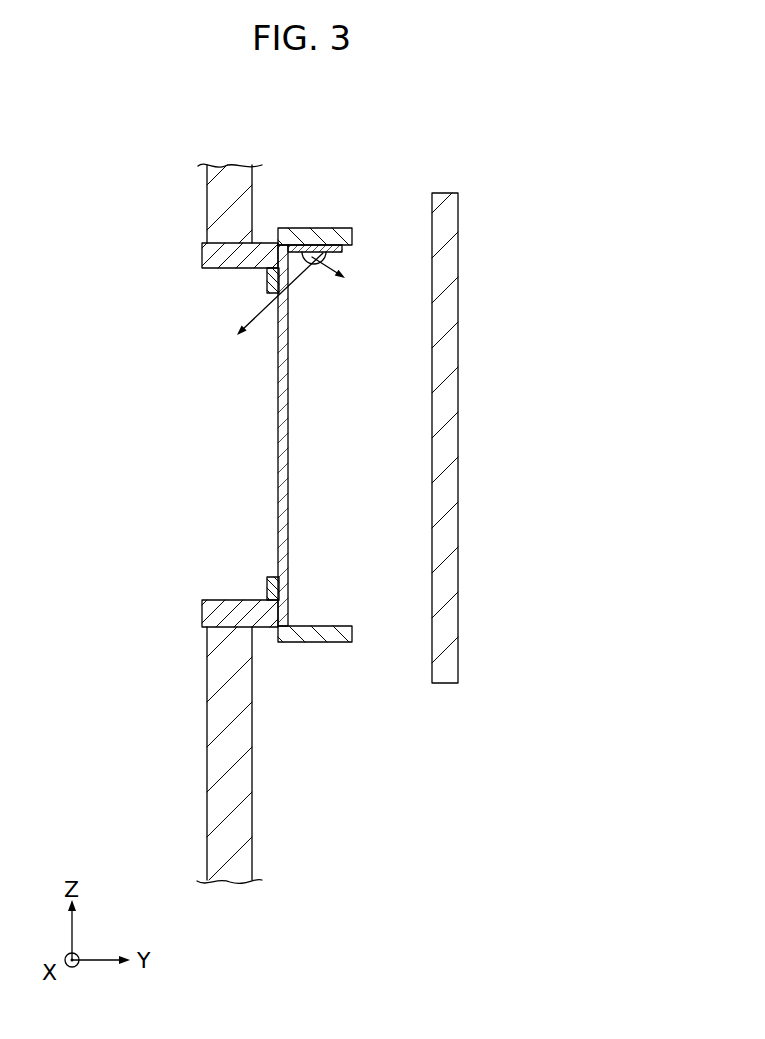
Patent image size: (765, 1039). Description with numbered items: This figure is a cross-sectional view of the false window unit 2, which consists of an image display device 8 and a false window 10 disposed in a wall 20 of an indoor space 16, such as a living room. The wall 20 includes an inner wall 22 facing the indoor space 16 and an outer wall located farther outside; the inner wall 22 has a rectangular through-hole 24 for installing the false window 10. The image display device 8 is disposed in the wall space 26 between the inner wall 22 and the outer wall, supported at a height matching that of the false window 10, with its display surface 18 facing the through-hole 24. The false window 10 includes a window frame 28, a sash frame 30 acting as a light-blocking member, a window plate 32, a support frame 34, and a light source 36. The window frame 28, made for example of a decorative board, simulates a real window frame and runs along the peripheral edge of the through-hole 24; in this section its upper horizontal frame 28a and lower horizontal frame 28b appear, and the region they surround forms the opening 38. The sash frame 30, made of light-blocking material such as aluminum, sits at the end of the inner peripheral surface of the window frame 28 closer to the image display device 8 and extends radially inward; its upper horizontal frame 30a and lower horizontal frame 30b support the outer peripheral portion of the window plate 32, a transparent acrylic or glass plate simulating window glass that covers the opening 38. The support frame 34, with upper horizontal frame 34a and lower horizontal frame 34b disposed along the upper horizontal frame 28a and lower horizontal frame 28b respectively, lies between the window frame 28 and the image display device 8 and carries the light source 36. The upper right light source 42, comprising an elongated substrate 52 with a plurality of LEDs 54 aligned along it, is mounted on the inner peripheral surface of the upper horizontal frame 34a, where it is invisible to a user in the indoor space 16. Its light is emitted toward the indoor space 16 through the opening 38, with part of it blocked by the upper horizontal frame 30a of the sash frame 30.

The false window unit 2 is at (612, 178).
The image display device 8 is at (445, 683).
The false window 10 is at (185, 236).
The indoor space 16 is at (128, 509).
The display surface 18 is at (432, 645).
The wall 20 is at (191, 523).
The inner wall 22 is at (215, 770).
The through-hole 24 is at (207, 645).
The wall space 26 is at (388, 509).
The window frame 28 is at (202, 266).
The upper horizontal frame 28a is at (202, 252).
The lower horizontal frame 28b is at (202, 612).
The sash frame 30 is at (265, 283).
The upper horizontal frame 30a is at (266, 290).
The lower horizontal frame 30b is at (266, 580).
The window plate 32 is at (278, 433).
The support frame 34 is at (309, 642).
The upper horizontal frame 34a is at (310, 228).
The lower horizontal frame 34b is at (343, 642).
The light source 36 is at (364, 270).
The opening 38 is at (215, 600).
The upper right light source 42 is at (443, 188).
The substrate 52 is at (343, 248).
The LEDs 54 is at (330, 257).